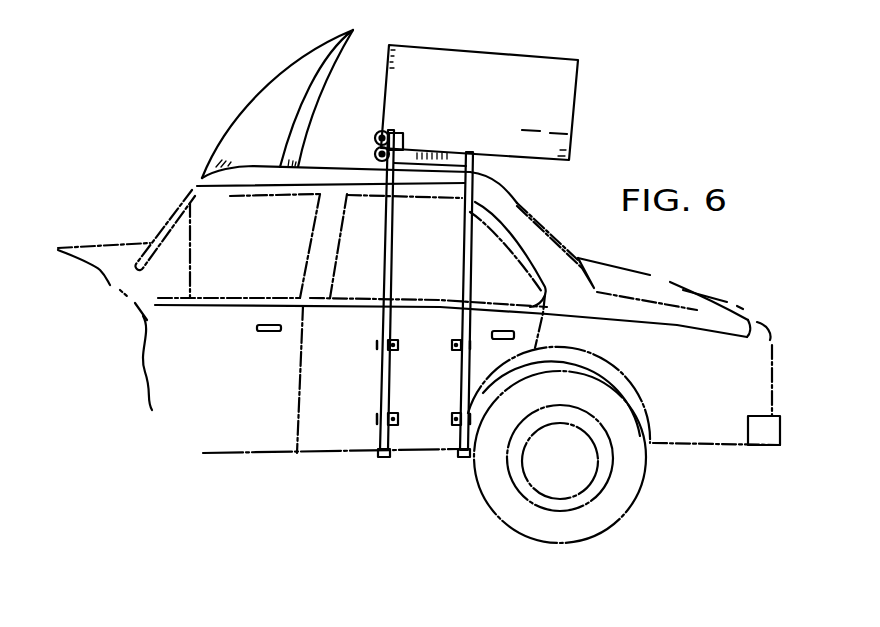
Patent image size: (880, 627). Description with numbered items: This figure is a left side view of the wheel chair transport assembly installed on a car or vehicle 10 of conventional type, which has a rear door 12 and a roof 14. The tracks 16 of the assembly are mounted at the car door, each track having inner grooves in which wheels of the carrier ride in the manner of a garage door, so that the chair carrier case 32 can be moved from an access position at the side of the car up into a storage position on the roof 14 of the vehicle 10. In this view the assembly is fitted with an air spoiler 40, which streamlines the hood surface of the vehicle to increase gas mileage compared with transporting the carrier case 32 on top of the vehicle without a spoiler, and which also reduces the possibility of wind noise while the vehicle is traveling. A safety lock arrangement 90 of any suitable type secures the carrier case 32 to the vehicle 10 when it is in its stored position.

The vehicle 10 is at (653, 275).
The rear door 12 is at (437, 384).
The roof 14 is at (345, 167).
The tracks 16 is at (433, 260).
The chair carrier case 32 is at (562, 97).
The air spoiler 40 is at (253, 117).
The safety lock arrangement 90 is at (405, 140).